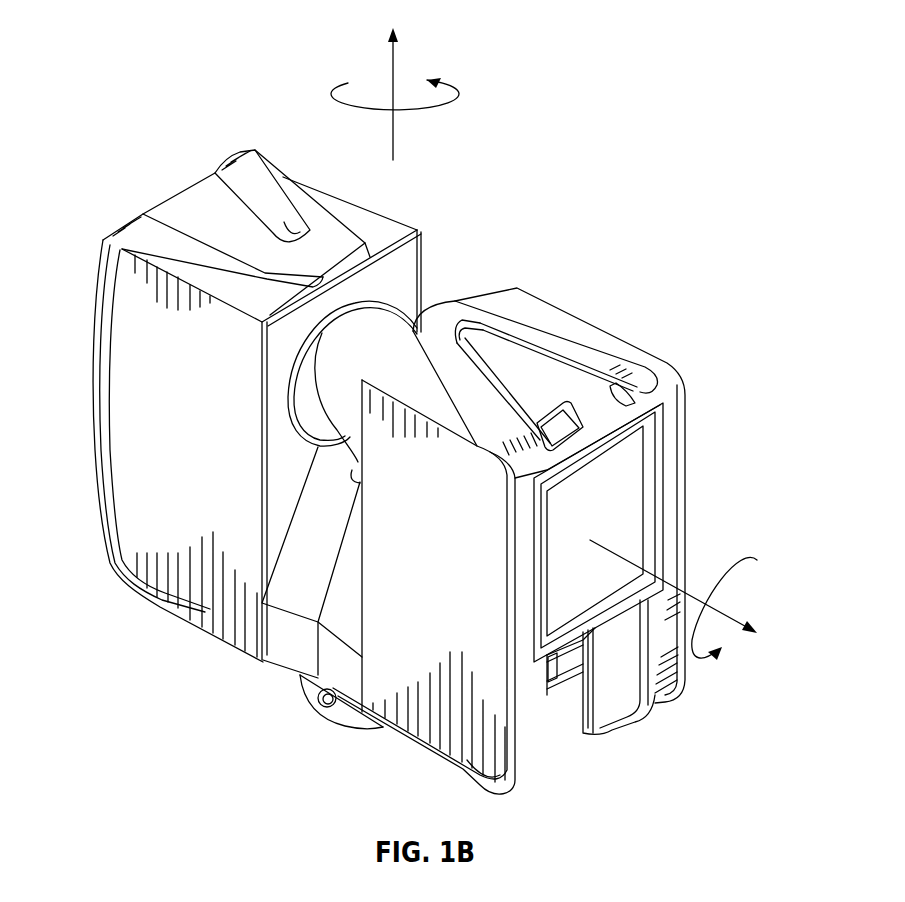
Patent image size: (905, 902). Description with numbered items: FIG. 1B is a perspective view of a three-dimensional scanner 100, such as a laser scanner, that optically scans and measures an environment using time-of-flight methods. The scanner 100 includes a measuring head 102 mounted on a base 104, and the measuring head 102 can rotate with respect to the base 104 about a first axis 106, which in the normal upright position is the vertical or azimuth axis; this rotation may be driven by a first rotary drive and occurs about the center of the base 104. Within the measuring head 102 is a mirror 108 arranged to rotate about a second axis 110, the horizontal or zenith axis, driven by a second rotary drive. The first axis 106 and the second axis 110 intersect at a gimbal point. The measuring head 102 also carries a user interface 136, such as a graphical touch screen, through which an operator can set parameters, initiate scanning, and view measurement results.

The 3D scanner 100 is at (183, 40).
The measuring head 102 is at (705, 532).
The base 104 is at (343, 720).
The first axis 106 is at (395, 58).
The mirror 108 is at (390, 328).
The second axis 110 is at (745, 616).
The user interface 136 is at (633, 470).